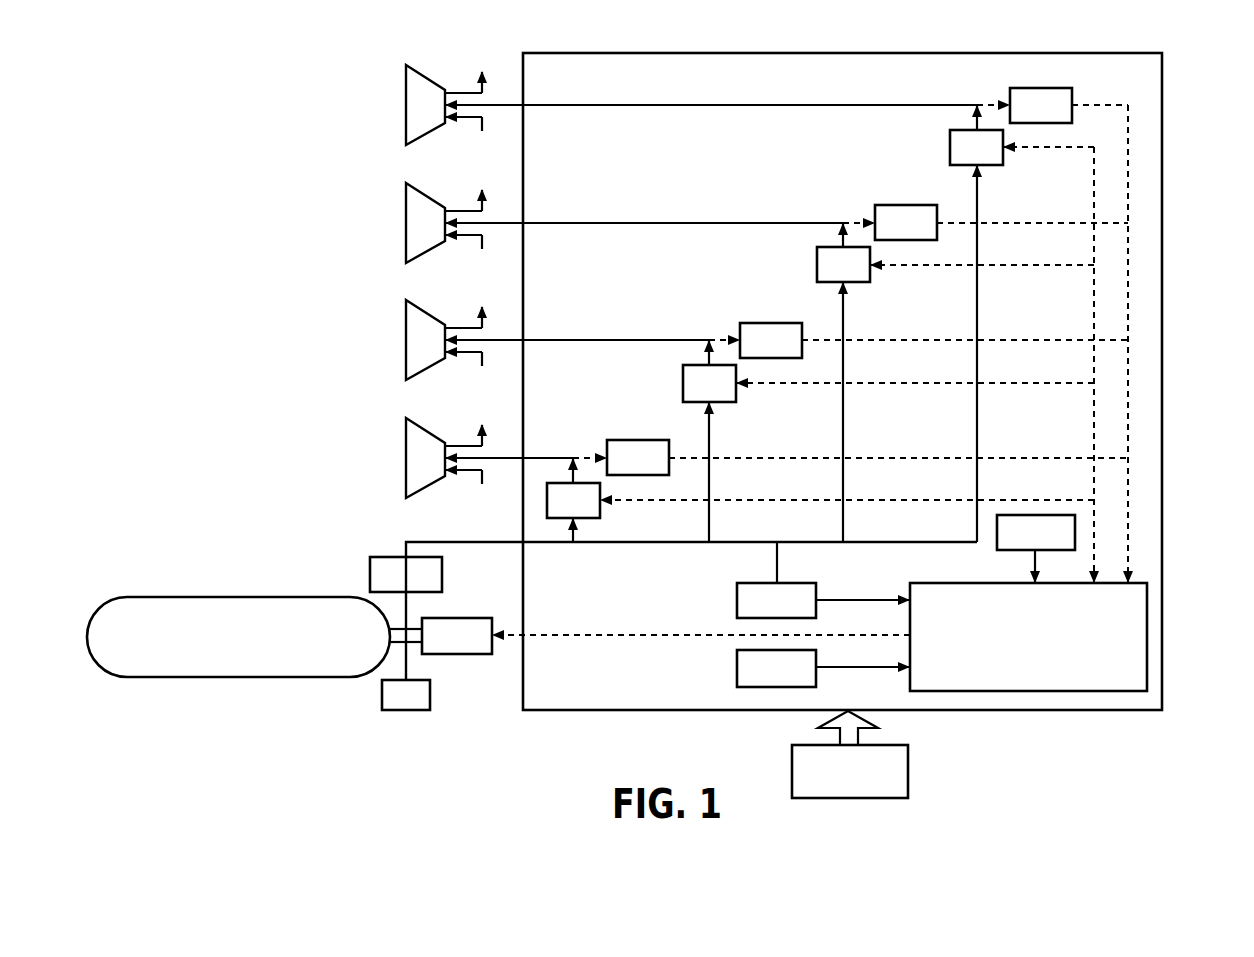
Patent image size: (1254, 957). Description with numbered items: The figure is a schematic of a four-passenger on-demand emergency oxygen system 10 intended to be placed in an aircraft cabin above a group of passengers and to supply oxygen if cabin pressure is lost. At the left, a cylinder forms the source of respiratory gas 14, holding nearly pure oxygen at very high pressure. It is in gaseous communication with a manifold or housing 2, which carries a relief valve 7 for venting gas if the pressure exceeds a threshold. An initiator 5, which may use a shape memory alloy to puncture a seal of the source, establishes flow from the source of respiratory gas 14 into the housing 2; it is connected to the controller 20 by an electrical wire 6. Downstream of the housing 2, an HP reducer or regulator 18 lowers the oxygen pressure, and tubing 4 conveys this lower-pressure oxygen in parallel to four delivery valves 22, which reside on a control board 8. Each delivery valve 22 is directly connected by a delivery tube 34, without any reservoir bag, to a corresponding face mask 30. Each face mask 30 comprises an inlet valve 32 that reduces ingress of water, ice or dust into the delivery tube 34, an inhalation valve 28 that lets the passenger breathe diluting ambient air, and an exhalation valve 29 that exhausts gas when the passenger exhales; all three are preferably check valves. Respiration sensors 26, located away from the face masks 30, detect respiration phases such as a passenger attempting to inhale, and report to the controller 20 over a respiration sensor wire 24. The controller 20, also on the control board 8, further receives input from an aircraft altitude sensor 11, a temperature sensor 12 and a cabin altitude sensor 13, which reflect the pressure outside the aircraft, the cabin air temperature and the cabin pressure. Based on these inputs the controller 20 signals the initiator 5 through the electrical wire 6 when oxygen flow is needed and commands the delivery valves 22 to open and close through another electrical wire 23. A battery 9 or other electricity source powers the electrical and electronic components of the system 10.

The housing 2 is at (410, 630).
The tubing 4 is at (450, 542).
The initiator 5 is at (462, 655).
The electrical wire 6 is at (511, 631).
The relief valve 7 is at (411, 711).
The control board 8 is at (667, 53).
The battery 9 is at (908, 775).
The emergency oxygen system 10 is at (1180, 752).
The aircraft altitude sensor 11 is at (737, 670).
The temperature sensor 12 is at (737, 600).
The cabin altitude sensor 13 is at (997, 541).
The source of respiratory gas 14 is at (185, 597).
The regulator 18 is at (385, 557).
The controller 20 is at (1147, 618).
The delivery valve 22 is at (950, 146).
The electrical wire 23 is at (1072, 149).
The respiration sensor wire 24 is at (1100, 104).
The respiration sensor 26 is at (1010, 95).
The inhalation valve 28 is at (442, 470).
The exhalation valve 29 is at (437, 442).
The face mask 30 is at (406, 100).
The inlet valve 32 is at (442, 455).
The delivery tube 34 is at (615, 106).